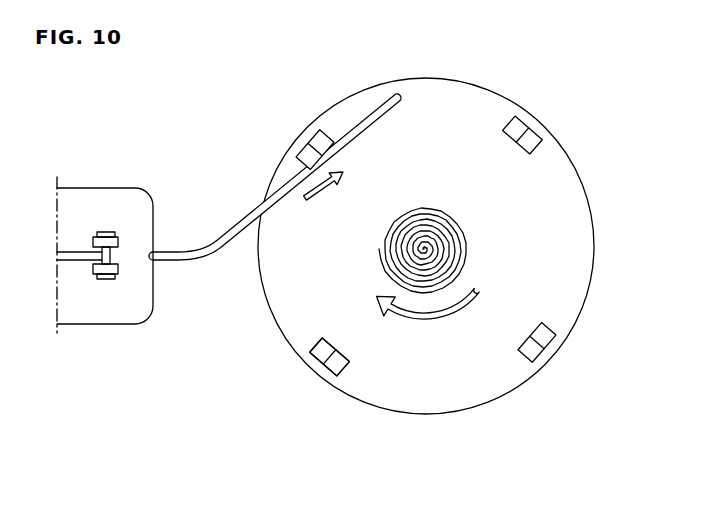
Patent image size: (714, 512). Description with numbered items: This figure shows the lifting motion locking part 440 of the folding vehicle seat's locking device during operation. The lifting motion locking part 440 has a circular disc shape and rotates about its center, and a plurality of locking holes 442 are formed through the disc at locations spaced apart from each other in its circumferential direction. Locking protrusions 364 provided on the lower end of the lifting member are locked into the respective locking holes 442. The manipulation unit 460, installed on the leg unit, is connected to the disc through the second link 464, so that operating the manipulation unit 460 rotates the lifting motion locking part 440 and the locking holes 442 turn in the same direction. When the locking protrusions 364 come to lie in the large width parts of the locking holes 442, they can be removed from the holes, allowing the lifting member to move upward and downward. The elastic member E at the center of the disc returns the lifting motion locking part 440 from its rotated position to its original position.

The lifting motion locking part 440 is at (550, 192).
The locking holes 442 is at (343, 367).
The locking protrusions 364 is at (310, 360).
The manipulation unit 460 is at (100, 192).
The second link 464 is at (248, 213).
The elastic member E is at (463, 247).